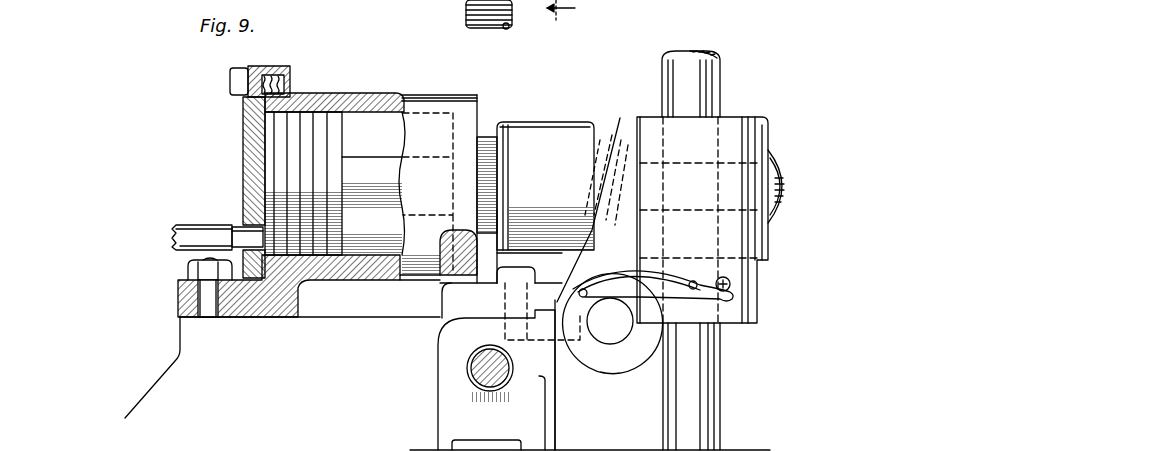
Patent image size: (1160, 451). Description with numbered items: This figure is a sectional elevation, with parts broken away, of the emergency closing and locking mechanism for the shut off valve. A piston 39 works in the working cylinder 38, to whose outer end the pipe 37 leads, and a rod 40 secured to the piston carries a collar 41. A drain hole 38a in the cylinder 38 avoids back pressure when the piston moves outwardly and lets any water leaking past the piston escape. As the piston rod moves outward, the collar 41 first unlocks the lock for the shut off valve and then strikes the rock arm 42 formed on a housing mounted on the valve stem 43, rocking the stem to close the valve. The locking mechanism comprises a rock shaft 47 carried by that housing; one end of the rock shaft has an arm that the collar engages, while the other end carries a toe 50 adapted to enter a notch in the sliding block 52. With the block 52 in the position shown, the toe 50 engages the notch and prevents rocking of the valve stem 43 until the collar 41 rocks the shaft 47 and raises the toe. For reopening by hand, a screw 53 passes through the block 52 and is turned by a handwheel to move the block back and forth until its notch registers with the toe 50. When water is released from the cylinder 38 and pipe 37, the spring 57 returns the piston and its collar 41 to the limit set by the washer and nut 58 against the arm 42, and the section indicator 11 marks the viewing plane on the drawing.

The section line 11 is at (566, 38).
The pipe 37 is at (213, 237).
The working cylinder 38 is at (343, 113).
The drain hole 38a is at (465, 250).
The piston 39 is at (307, 147).
The rod 40 is at (377, 173).
The collar 41 is at (547, 142).
The rock arm 42 is at (723, 128).
The valve stem 43 is at (703, 77).
The rock shaft 47 is at (609, 324).
The toe 50 is at (540, 313).
The sliding block 52 is at (482, 406).
The screw 53 is at (460, 2).
The spring 57 is at (599, 150).
The washer and nut 58 is at (786, 158).